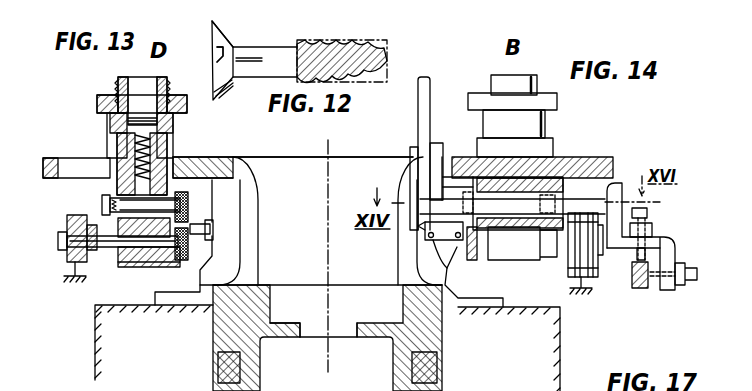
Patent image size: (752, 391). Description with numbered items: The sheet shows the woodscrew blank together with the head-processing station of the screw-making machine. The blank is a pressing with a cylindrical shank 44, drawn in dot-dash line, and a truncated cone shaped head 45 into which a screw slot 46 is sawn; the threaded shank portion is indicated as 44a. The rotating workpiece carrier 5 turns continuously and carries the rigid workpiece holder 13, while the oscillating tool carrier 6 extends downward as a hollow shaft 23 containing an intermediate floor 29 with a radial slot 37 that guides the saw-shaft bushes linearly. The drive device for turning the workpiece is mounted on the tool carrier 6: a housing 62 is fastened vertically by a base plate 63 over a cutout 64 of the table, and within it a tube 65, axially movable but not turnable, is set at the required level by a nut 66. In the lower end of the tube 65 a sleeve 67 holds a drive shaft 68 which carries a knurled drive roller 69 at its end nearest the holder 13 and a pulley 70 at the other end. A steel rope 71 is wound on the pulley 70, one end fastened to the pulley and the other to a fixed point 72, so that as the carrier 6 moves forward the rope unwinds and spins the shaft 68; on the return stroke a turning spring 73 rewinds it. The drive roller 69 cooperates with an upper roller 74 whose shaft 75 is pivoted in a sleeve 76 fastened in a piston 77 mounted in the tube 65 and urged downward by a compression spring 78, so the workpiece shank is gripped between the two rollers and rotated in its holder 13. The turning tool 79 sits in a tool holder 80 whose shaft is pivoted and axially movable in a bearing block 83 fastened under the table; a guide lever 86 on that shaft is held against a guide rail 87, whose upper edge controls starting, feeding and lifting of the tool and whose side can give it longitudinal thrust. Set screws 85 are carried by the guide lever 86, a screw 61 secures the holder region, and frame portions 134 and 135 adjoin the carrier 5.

In FIG. 13, the workpiece carrier 5 is at (95, 356).
In FIG. 14, the workpiece carrier 5 is at (548, 342).
In FIG. 13, the tool carrier 6 is at (44, 214).
In FIG. 14, the tool carrier 6 is at (471, 383).
In FIG. 13, the rigid workpiece holder 13 is at (203, 268).
In FIG. 14, the rigid workpiece holder 13 is at (457, 268).
In FIG. 13, the hollow shaft 23 is at (258, 229).
In FIG. 13, the intermediate floor 29 is at (286, 333).
In FIG. 13, the radial slot 37 is at (343, 333).
In FIG. 12, the cylindrical shank 44 is at (327, 57).
In FIG. 12, the screw thread 44a is at (345, 43).
In FIG. 12, the truncated cone shaped head 45 is at (222, 43).
In FIG. 12, the screw slot 46 is at (218, 58).
In FIG. 13, the fastening bolt 61 is at (212, 226).
In FIG. 14, the fastening bolt 61 is at (428, 232).
In FIG. 13, the housing 62 is at (112, 127).
In FIG. 14, the housing 62 is at (530, 120).
In FIG. 13, the base plate 63 is at (170, 160).
In FIG. 14, the base plate 63 is at (490, 150).
In FIG. 13, the cutout 64 is at (86, 168).
In FIG. 13, the tube 65 is at (118, 85).
In FIG. 14, the tube 65 is at (530, 77).
In FIG. 13, the nut 66 is at (100, 104).
In FIG. 14, the nut 66 is at (557, 102).
In FIG. 13, the sleeve 67 is at (122, 252).
In FIG. 14, the sleeve 67 is at (547, 245).
In FIG. 13, the drive shaft 68 is at (150, 250).
In FIG. 13, the drive roller 69 is at (176, 255).
In FIG. 14, the drive roller 69 is at (476, 255).
In FIG. 13, the pulley 70 is at (60, 238).
In FIG. 14, the pulley 70 is at (592, 266).
In FIG. 13, the steel rope 71 is at (80, 218).
In FIG. 14, the steel rope 71 is at (580, 288).
In FIG. 13, the fixed point 72 is at (75, 280).
In FIG. 14, the fixed point 72 is at (582, 296).
In FIG. 13, the turning spring 73 is at (92, 262).
In FIG. 13, the roller 74 is at (188, 198).
In FIG. 13, the shaft 75 is at (189, 213).
In FIG. 13, the sleeve 76 is at (108, 198).
In FIG. 13, the piston 77 is at (172, 172).
In FIG. 13, the compression spring 78 is at (170, 140).
In FIG. 14, the tool 79 is at (422, 110).
In FIG. 14, the tool holder 80 is at (436, 150).
In FIG. 14, the bearing block 83 is at (560, 176).
In FIG. 14, the adjusting screw 85 is at (650, 226).
In FIG. 14, the guide lever 86 is at (660, 248).
In FIG. 14, the guide rail 87 is at (637, 290).
In FIG. 14, the frame portion 134 is at (560, 372).
In FIG. 14, the frame edge 135 is at (585, 383).